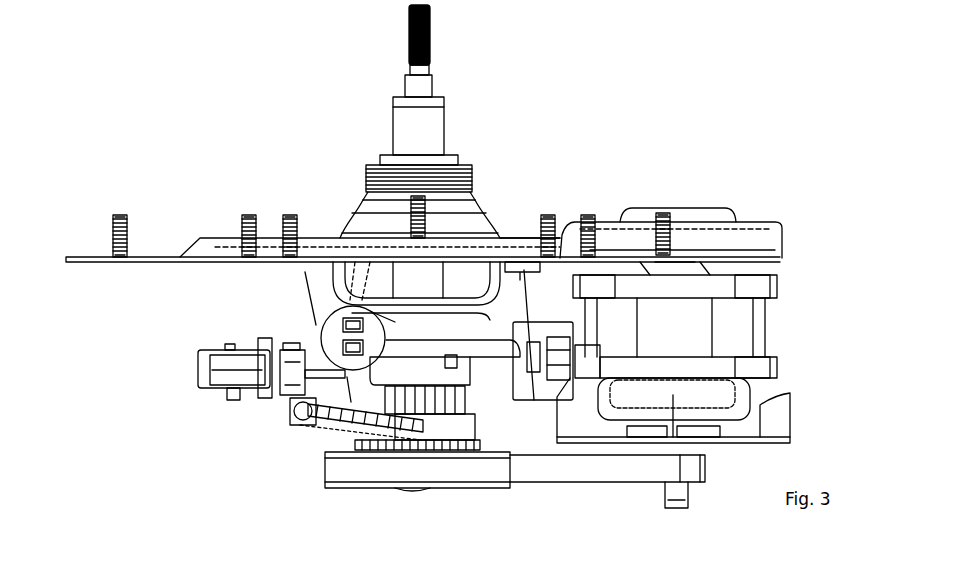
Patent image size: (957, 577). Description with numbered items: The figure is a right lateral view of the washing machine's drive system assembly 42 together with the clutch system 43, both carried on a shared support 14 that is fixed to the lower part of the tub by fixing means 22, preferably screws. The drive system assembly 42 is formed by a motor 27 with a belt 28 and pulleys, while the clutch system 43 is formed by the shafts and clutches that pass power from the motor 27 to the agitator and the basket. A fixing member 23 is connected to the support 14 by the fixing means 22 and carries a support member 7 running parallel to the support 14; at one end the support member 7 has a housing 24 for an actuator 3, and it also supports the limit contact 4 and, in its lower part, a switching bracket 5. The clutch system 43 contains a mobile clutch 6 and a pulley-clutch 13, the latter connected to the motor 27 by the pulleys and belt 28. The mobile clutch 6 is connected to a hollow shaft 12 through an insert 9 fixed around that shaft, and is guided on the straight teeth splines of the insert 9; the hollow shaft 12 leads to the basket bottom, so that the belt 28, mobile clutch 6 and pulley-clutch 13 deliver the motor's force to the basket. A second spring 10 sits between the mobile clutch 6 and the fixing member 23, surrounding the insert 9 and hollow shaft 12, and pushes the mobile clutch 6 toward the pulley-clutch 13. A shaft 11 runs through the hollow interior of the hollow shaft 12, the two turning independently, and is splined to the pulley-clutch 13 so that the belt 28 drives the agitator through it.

The actuator 3 is at (207, 372).
The limit contact 4 is at (300, 398).
The switching bracket 5 is at (315, 425).
The mobile clutch 6 is at (437, 397).
The support member 7 is at (284, 356).
The insert 9 is at (460, 447).
The second spring 10 is at (433, 415).
The shaft 11 is at (430, 35).
The hollow shaft 12 is at (428, 133).
The pulley-clutch 13 is at (372, 490).
The support 14 is at (138, 264).
The fixing means 22 is at (105, 213).
The fixing member 23 is at (431, 318).
The housing 24 is at (202, 346).
The motor 27 is at (712, 320).
The belt 28 is at (570, 473).
The drive system assembly 42 is at (790, 373).
The clutch system 43 is at (203, 462).